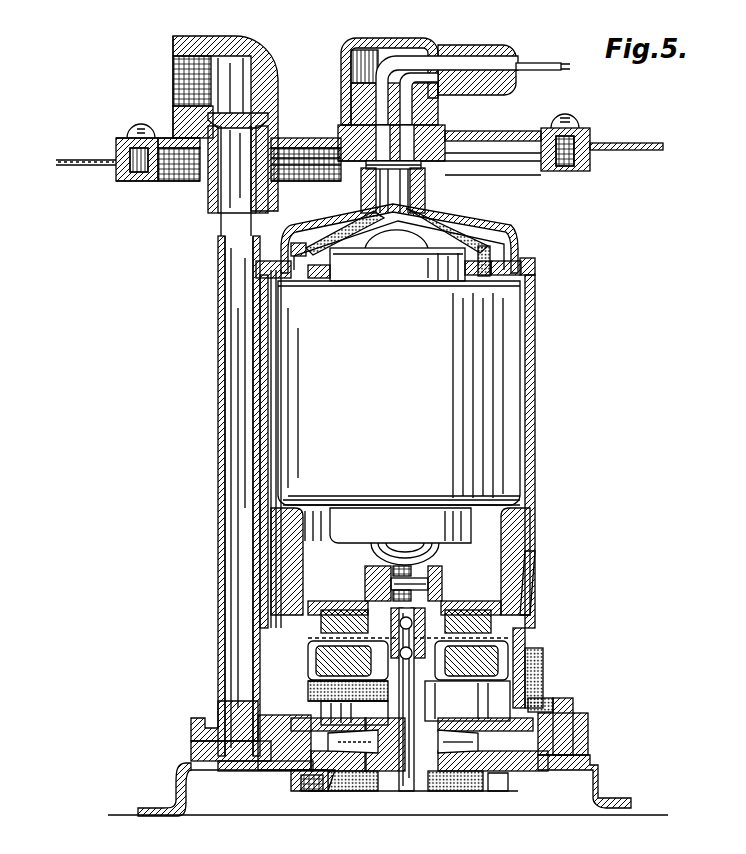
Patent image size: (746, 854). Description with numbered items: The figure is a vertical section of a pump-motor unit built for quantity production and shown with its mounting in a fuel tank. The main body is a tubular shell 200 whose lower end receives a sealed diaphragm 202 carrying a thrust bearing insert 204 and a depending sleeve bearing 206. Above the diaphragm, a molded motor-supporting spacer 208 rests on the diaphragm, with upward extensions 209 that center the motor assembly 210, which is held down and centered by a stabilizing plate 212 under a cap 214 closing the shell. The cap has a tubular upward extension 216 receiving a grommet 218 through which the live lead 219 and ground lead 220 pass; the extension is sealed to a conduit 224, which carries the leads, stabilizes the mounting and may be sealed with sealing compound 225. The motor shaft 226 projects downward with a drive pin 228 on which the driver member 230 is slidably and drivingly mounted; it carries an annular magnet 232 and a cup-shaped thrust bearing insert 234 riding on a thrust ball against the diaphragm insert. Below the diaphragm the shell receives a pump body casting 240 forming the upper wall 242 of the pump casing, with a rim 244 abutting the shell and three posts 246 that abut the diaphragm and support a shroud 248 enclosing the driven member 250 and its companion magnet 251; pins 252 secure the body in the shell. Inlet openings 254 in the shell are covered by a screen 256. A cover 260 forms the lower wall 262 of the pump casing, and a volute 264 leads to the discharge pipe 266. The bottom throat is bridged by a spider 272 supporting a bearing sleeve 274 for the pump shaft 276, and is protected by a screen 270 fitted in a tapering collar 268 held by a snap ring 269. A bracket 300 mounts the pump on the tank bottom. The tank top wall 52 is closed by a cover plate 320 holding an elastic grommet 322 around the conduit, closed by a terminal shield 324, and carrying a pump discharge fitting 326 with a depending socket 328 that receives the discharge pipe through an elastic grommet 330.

The top wall 52 is at (616, 135).
The tubular shell 200 is at (528, 328).
The diaphragm 202 is at (520, 597).
The thrust bearing insert 204 is at (423, 591).
The sleeve bearing 206 is at (415, 703).
The motor-supporting spacer 208 is at (513, 497).
The upward extensions 209 is at (513, 488).
The motor assembly 210 is at (399, 367).
The stabilizing plate 212 is at (528, 260).
The cap 214 is at (507, 229).
The tubular upward extension 216 is at (410, 188).
The grommet 218 is at (348, 205).
The live lead 219 is at (470, 215).
The ground lead 220 is at (327, 233).
The conduit 224 is at (407, 153).
The sealing compound 225 is at (333, 78).
The motor shaft 226 is at (420, 561).
The drive pin 228 is at (427, 583).
The driver member 230 is at (372, 561).
The annular magnet 232 is at (335, 616).
The cup-shaped thrust bearing insert 234 is at (377, 601).
The pump body casting 240 is at (200, 701).
The upper wall 242 is at (493, 703).
The rim 244 is at (553, 697).
The posts 246 is at (345, 658).
The shroud 248 is at (263, 763).
The driven member 250 is at (340, 632).
The companion magnet 251 is at (345, 646).
The pins 252 is at (345, 670).
The inlet openings 254 is at (518, 633).
The screen 256 is at (530, 660).
The cover 260 is at (205, 743).
The lower wall 262 is at (461, 794).
The volute 264 is at (168, 763).
The discharge pipe 266 is at (210, 246).
The tapering collar 268 is at (280, 775).
The snap ring 269 is at (303, 783).
The screen 270 is at (497, 781).
The spider 272 is at (353, 794).
The bearing sleeve 274 is at (449, 773).
The pump shaft 276 is at (368, 773).
The bracket 300 is at (598, 773).
The cover plate 320 is at (523, 123).
The elastic grommet 322 is at (330, 118).
The terminal shield 324 is at (463, 87).
The pump discharge fitting 326 is at (257, 52).
The depending socket 328 is at (195, 205).
The elastic grommet 330 is at (188, 175).